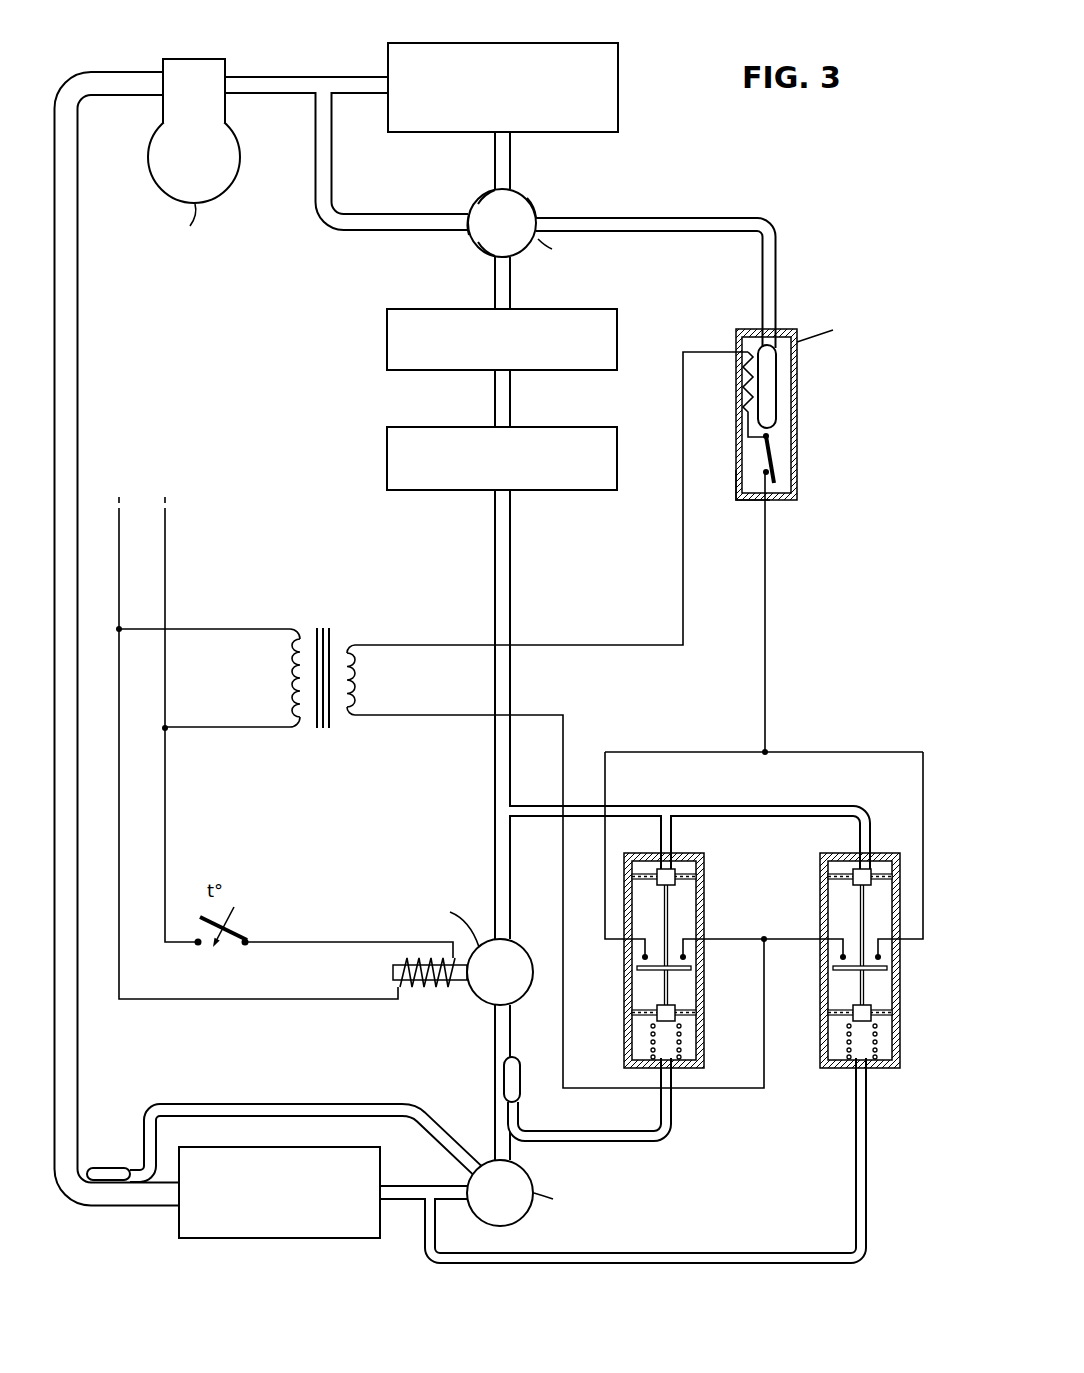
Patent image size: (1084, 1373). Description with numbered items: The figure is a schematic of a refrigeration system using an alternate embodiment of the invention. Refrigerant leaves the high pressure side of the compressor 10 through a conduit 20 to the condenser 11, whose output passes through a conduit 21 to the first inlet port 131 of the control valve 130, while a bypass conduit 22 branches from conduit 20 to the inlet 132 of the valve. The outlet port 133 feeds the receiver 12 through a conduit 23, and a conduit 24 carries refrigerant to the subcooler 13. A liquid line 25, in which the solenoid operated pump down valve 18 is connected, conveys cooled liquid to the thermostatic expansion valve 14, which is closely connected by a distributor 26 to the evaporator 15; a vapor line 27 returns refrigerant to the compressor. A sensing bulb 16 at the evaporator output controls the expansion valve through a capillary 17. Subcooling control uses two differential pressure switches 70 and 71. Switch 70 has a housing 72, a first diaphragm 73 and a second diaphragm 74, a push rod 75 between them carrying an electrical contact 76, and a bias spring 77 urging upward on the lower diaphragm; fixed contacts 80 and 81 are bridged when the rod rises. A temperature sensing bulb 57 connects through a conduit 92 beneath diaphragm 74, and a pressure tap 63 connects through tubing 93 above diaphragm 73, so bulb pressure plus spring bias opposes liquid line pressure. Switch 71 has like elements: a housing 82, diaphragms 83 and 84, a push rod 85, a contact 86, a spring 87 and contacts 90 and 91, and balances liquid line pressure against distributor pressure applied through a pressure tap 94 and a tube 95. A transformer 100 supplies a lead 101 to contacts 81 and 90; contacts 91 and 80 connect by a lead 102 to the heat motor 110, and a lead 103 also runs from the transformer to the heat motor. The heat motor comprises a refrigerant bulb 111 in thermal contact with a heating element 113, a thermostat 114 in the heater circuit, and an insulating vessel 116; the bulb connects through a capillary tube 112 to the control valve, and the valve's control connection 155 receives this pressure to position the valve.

The compressor 10 is at (193, 77).
The condenser 11 is at (598, 74).
The receiver 12 is at (388, 344).
The subcooler 13 is at (388, 465).
The thermostatic expansion valve 14 is at (486, 1216).
The evaporator 15 is at (270, 1228).
The sensing bulb 16 is at (105, 1167).
The capillary 17 is at (292, 1104).
The solenoid operated pump down valve 18 is at (477, 997).
The conduit 20 is at (283, 78).
The conduit 21 is at (496, 151).
The bypass conduit 22 is at (337, 233).
The conduit 23 is at (510, 282).
The conduit 24 is at (510, 398).
The liquid line 25 is at (494, 767).
The distributor 26 is at (408, 1187).
The vapor line 27 is at (70, 487).
The temperature sensing bulb 57 is at (521, 1086).
The pressure tap 63 is at (511, 806).
The differential pressure switch 70 is at (678, 944).
The differential pressure switch assembly 71 is at (859, 944).
The housing 72 is at (706, 918).
The first diaphragm 73 is at (690, 873).
The second diaphragm 74 is at (700, 1012).
The push rod 75 is at (660, 988).
The electrical contact 76 is at (640, 970).
The bias spring 77 is at (650, 1050).
The electrical contact 80 is at (642, 957).
The electrical contact 81 is at (686, 957).
The housing 82 is at (820, 918).
The first diaphragm 83 is at (838, 873).
The second diaphragm 84 is at (897, 1012).
The push rod 85 is at (855, 992).
The electrical contact 86 is at (836, 970).
The bias spring 87 is at (846, 1050).
The electrical contact 90 is at (840, 957).
The electrical contact 91 is at (881, 957).
The conduit 92 is at (670, 1131).
The tubing 93 is at (734, 807).
The pressure tap 94 is at (428, 1203).
The tube 95 is at (650, 1263).
The transformer 100 is at (345, 627).
The electrical lead 101 is at (410, 716).
The lead 102 is at (659, 752).
The lead 103 is at (568, 645).
The heat motor 110 is at (803, 405).
The refrigerant bulb 111 is at (768, 397).
The capillary tube 112 is at (673, 219).
The heating element 113 is at (748, 413).
The thermostat 114 is at (770, 463).
The double-walled vacuum insulated vessel 116 is at (735, 483).
The control valve 130 is at (540, 193).
The first inlet port 131 is at (490, 196).
The inlet 132 is at (468, 232).
The outlet port 133 is at (490, 248).
The valve control port 155 is at (538, 218).